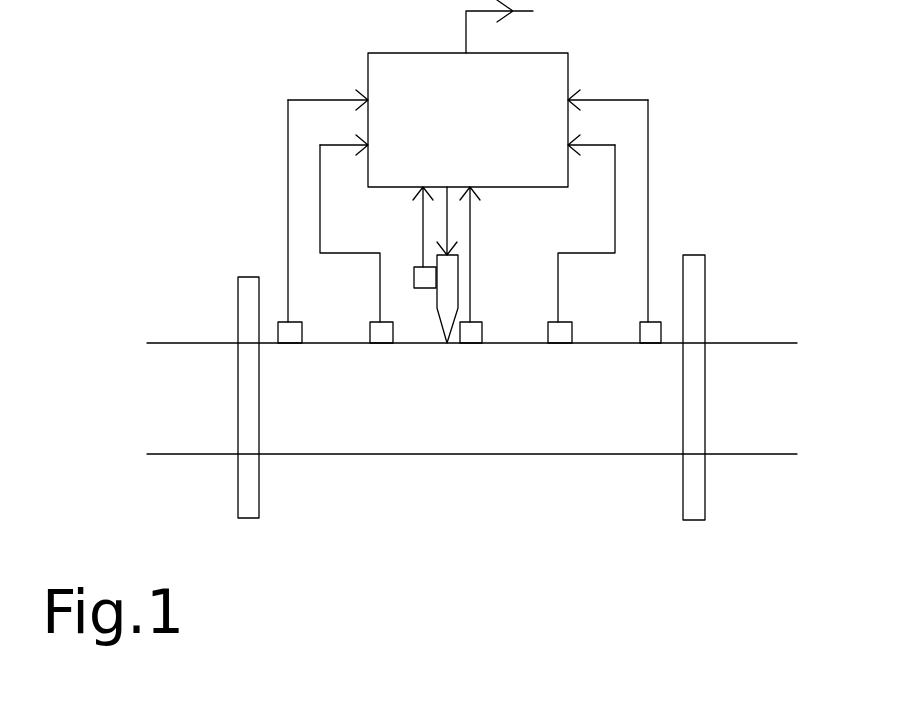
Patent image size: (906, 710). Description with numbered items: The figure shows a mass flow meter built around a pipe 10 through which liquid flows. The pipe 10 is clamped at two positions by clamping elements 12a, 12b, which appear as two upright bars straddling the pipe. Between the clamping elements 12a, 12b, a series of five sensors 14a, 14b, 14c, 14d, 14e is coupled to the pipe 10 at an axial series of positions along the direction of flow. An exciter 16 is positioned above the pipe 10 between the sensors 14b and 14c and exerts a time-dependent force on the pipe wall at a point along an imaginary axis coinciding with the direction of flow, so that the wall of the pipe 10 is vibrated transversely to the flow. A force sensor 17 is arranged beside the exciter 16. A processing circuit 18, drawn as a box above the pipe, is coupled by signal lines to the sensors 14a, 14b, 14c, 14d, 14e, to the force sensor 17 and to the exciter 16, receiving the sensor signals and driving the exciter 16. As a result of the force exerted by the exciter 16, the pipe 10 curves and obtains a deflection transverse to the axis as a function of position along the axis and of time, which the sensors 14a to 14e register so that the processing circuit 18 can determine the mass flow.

The pipe 10 is at (323, 455).
The clamping element 12a is at (238, 488).
The clamping element 12b is at (683, 483).
The sensor 14a is at (280, 333).
The sensor 14b is at (370, 333).
The sensor 14c is at (482, 334).
The sensor 14d is at (573, 335).
The sensor 14e is at (662, 335).
The exciter 16 is at (458, 305).
The force sensor 17 is at (414, 278).
The processing circuit 18 is at (568, 63).